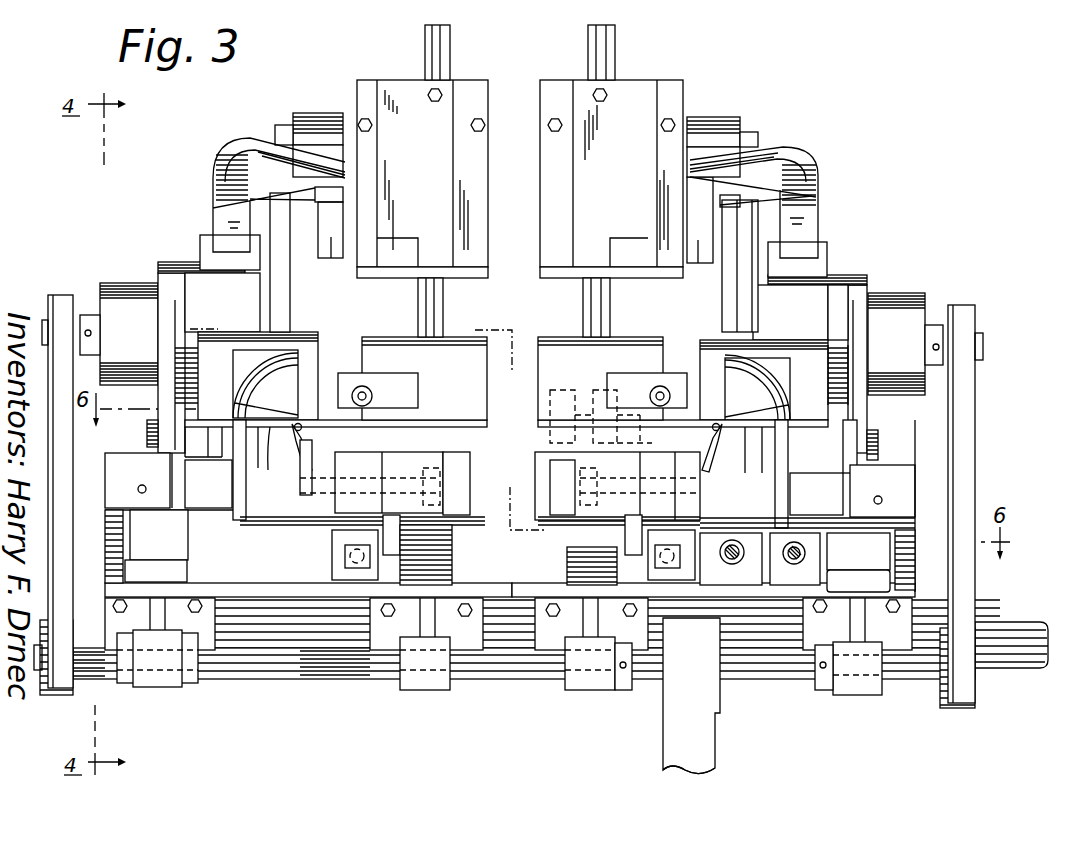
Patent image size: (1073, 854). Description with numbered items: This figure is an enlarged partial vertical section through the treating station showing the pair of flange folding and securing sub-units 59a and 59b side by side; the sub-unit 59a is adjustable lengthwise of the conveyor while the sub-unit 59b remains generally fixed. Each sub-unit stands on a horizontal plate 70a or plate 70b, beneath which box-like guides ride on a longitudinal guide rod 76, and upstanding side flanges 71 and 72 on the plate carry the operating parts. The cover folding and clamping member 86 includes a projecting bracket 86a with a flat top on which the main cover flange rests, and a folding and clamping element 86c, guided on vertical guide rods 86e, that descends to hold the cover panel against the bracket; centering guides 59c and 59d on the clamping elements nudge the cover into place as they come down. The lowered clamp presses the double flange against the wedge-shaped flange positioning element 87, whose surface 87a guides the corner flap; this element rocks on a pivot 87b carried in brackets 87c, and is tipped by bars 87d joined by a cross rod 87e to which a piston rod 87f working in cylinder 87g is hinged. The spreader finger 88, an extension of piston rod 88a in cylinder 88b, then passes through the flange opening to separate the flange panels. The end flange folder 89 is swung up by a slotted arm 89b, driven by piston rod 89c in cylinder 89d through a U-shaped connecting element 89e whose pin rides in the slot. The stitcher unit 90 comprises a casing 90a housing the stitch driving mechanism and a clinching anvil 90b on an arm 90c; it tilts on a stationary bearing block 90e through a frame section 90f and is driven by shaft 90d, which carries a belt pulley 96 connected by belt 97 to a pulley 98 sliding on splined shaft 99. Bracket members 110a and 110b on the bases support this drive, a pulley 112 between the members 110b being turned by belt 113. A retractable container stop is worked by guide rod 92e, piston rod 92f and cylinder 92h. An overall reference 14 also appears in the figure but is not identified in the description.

The apparatus 14 is at (518, 70).
The sub-unit 59a is at (334, 68).
The sub-unit 59b is at (700, 78).
The centering guide 59c is at (341, 285).
The centering guide 59d is at (690, 290).
The horizontal plate 70a is at (222, 584).
The plate 70b is at (546, 592).
The side flange 71 is at (110, 533).
The side flange 72 is at (445, 556).
The guide rod 76 is at (1022, 668).
The cover folding and clamping member 86 is at (541, 187).
The projecting bracket 86a is at (467, 420).
The folding and clamping element 86c is at (393, 262).
The vertical guide rods 86e is at (606, 57).
The flange positioning element 87 is at (229, 326).
The guide surface 87a is at (258, 370).
The pivot 87b is at (828, 425).
The brackets 87c is at (212, 460).
The bars 87d is at (789, 493).
The cross rod 87e is at (303, 525).
The piston rod 87f is at (344, 560).
The cylinder 87g is at (392, 528).
The flange spreader finger 88 is at (376, 393).
The piston rod 88a is at (367, 390).
The cylinder 88b is at (346, 372).
The end flange folder 89 is at (255, 470).
The slotted arm 89b is at (313, 434).
The piston rod 89c is at (325, 486).
The cylinder 89d is at (455, 462).
The U-shaped connecting element 89e is at (300, 489).
The stitcher unit 90 is at (307, 102).
The casing 90a is at (343, 141).
The clinching anvil 90b is at (344, 232).
The arm 90c is at (222, 188).
The shaft 90d is at (984, 342).
The bearing block 90e is at (131, 283).
The frame section 90f is at (205, 240).
The guide rod 92e is at (806, 552).
The piston rod 92f is at (735, 540).
The cylinder 92h is at (720, 573).
The belt pulley 96 is at (60, 297).
The belt 97 is at (62, 474).
The pulley 98 is at (73, 690).
The shaft 99 is at (258, 668).
The bracket members 110a is at (170, 686).
The bracket members 110b is at (596, 691).
The pulley 112 is at (721, 708).
The belt 113 is at (715, 760).